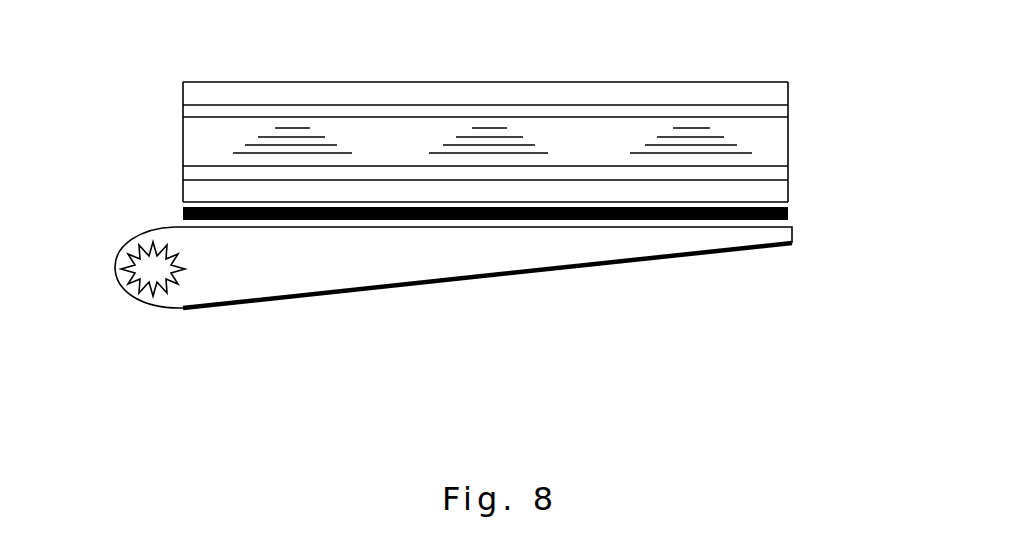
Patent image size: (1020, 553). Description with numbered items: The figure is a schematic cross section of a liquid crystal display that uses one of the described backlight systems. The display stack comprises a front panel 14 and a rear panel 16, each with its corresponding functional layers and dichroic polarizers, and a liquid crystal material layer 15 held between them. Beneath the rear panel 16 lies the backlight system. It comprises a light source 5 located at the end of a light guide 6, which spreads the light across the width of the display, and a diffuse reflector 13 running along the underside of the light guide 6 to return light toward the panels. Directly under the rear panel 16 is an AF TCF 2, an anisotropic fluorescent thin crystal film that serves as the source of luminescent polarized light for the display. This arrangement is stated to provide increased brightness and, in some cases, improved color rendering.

The AF TCF 2 is at (183, 215).
The light source 5 is at (153, 268).
The light guide 6 is at (265, 268).
The diffuse reflector 13 is at (522, 275).
The front panel 14 is at (202, 93).
The liquid crystal material layer 15 is at (773, 144).
The rear panel 16 is at (777, 188).